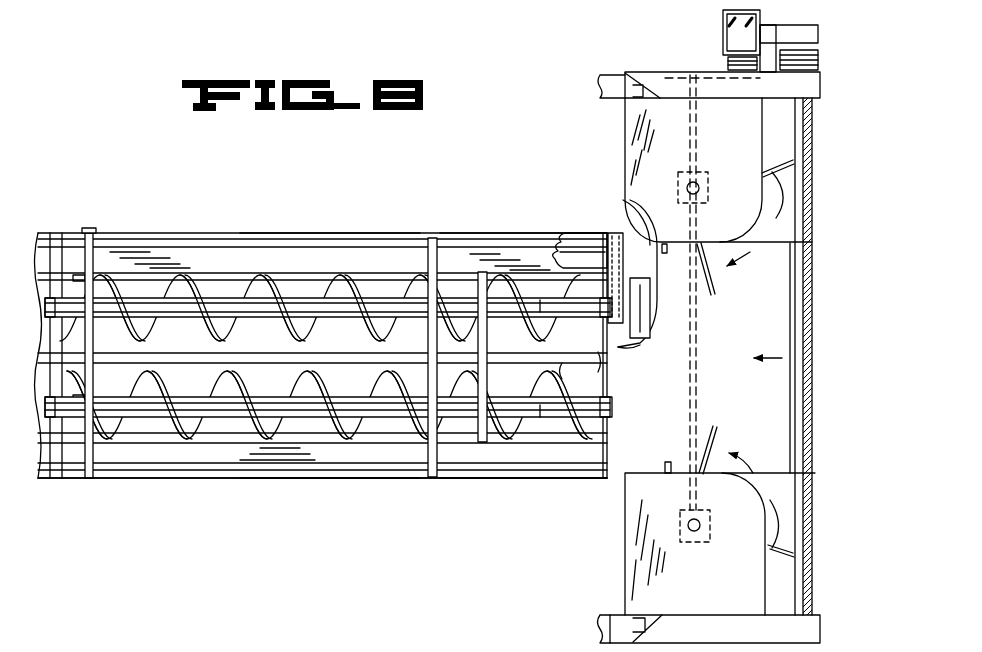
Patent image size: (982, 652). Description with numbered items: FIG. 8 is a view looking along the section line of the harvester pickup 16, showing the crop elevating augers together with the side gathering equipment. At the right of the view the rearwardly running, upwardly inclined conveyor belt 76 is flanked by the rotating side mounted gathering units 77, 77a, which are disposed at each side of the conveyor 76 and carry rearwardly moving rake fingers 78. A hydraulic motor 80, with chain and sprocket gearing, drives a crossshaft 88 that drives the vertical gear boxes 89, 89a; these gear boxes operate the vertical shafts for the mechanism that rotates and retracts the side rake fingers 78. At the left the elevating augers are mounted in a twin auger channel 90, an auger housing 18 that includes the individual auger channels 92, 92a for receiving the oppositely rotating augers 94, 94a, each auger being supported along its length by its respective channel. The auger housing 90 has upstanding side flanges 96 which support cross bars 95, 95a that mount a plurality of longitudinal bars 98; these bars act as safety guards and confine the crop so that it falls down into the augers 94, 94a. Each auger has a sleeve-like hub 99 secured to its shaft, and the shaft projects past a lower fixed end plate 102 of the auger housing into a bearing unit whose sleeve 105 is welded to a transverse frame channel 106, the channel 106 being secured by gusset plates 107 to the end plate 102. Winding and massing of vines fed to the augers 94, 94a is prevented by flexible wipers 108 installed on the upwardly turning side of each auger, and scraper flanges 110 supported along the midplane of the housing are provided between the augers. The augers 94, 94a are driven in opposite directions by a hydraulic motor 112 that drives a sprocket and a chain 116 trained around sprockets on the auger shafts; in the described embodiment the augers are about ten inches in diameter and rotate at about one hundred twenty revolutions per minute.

The pickup 16 is at (820, 300).
The auger housing 18 is at (264, 228).
The conveyor belt 76 is at (760, 399).
The side mounted gathering unit 77 is at (621, 565).
The side mounted gathering unit 77a is at (621, 148).
The rake fingers 78 is at (762, 490).
The hydraulic motor 80 is at (735, 41).
The crossshaft 88 is at (697, 140).
The vertical gear box 89 is at (712, 528).
The vertical gear box 89a is at (712, 187).
The twin auger channel 90 is at (266, 484).
The auger channel 92 is at (215, 430).
The auger channel 92a is at (228, 292).
The auger 94 is at (346, 426).
The auger 94a is at (338, 292).
The cross bar 95 is at (86, 480).
The cross bar 95a is at (433, 243).
The upstanding side flanges 96 is at (325, 233).
The longitudinal bars 98 is at (177, 318).
The sleeve-like hub 99 is at (343, 400).
The lower fixed end plate 102 is at (627, 348).
The sleeve 105 is at (652, 310).
The transverse frame channel 106 is at (650, 343).
The gusset plates 107 is at (641, 272).
The flexible wipers 108 is at (492, 248).
The scraper flanges 110 is at (570, 358).
The hydraulic motor 112 is at (592, 232).
The chain 116 is at (627, 232).